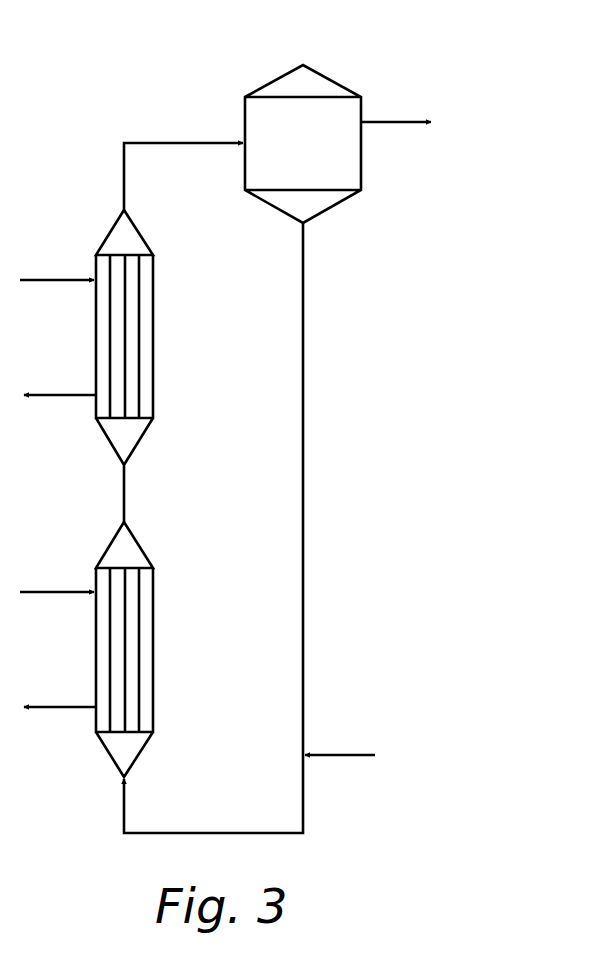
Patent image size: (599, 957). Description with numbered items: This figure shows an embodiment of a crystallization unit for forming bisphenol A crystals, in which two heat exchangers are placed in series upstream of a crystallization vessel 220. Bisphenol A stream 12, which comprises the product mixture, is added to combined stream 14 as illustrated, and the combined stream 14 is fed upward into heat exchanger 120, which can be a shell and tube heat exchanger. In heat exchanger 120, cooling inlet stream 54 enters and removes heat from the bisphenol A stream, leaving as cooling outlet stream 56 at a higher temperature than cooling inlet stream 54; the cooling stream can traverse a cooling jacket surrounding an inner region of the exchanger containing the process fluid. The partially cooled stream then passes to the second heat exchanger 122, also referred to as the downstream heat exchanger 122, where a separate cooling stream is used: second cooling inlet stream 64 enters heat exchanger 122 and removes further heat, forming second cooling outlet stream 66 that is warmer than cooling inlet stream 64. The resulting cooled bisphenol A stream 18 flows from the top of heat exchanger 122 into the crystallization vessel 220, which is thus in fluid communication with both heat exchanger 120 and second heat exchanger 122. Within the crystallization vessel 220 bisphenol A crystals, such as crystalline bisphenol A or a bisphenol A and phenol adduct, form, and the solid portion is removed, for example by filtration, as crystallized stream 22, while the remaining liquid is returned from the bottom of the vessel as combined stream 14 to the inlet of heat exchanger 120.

The crystallization vessel 220 is at (286, 161).
The cooled bisphenol A stream 18 is at (124, 178).
The crystallized stream 22 is at (391, 122).
The combined stream 14 is at (188, 833).
The bisphenol A stream 12 is at (338, 755).
The second heat exchanger 122 is at (122, 432).
The heat exchanger 120 is at (122, 745).
The second cooling inlet stream 64 is at (55, 280).
The second cooling outlet stream 66 is at (65, 395).
The cooling inlet stream 54 is at (55, 592).
The cooling outlet stream 56 is at (65, 707).